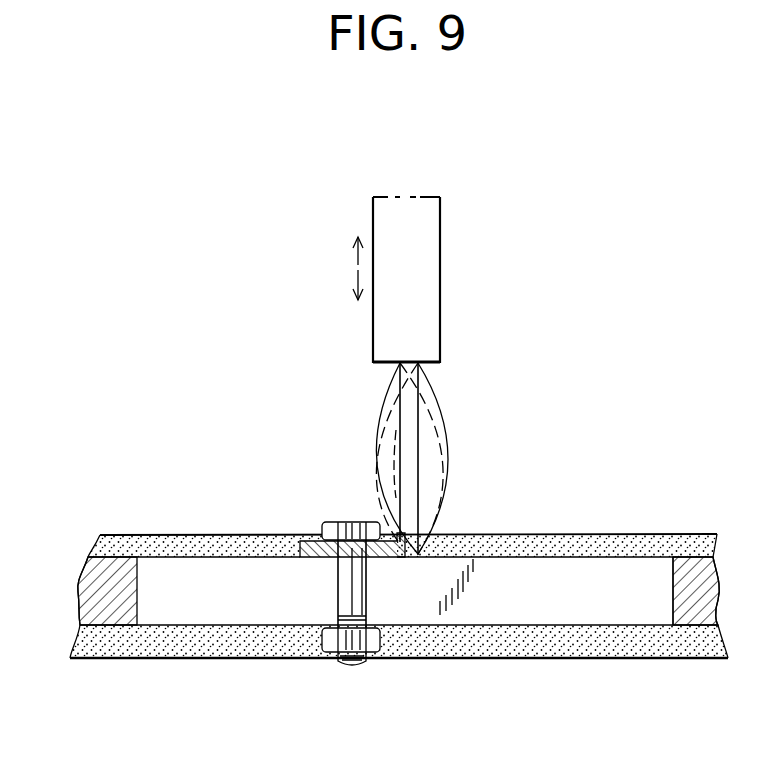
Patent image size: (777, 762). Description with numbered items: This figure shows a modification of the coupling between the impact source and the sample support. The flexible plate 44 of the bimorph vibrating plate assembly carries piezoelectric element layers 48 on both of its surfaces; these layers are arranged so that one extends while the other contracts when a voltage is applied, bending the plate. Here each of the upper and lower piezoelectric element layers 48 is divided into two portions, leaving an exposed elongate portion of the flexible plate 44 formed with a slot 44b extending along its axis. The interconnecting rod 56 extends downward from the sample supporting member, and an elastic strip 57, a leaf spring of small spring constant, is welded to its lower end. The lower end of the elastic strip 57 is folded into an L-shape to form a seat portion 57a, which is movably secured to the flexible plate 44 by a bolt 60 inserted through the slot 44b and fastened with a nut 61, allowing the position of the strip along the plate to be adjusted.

The flexible plate 44 is at (100, 578).
The slot 44b is at (625, 605).
The piezoelectric element layers 48 is at (138, 551).
The interconnecting rod 56 is at (420, 243).
The elastic strip 57 is at (380, 460).
The seat portion 57a is at (313, 535).
The bolt 60 is at (340, 592).
The nut 61 is at (325, 634).